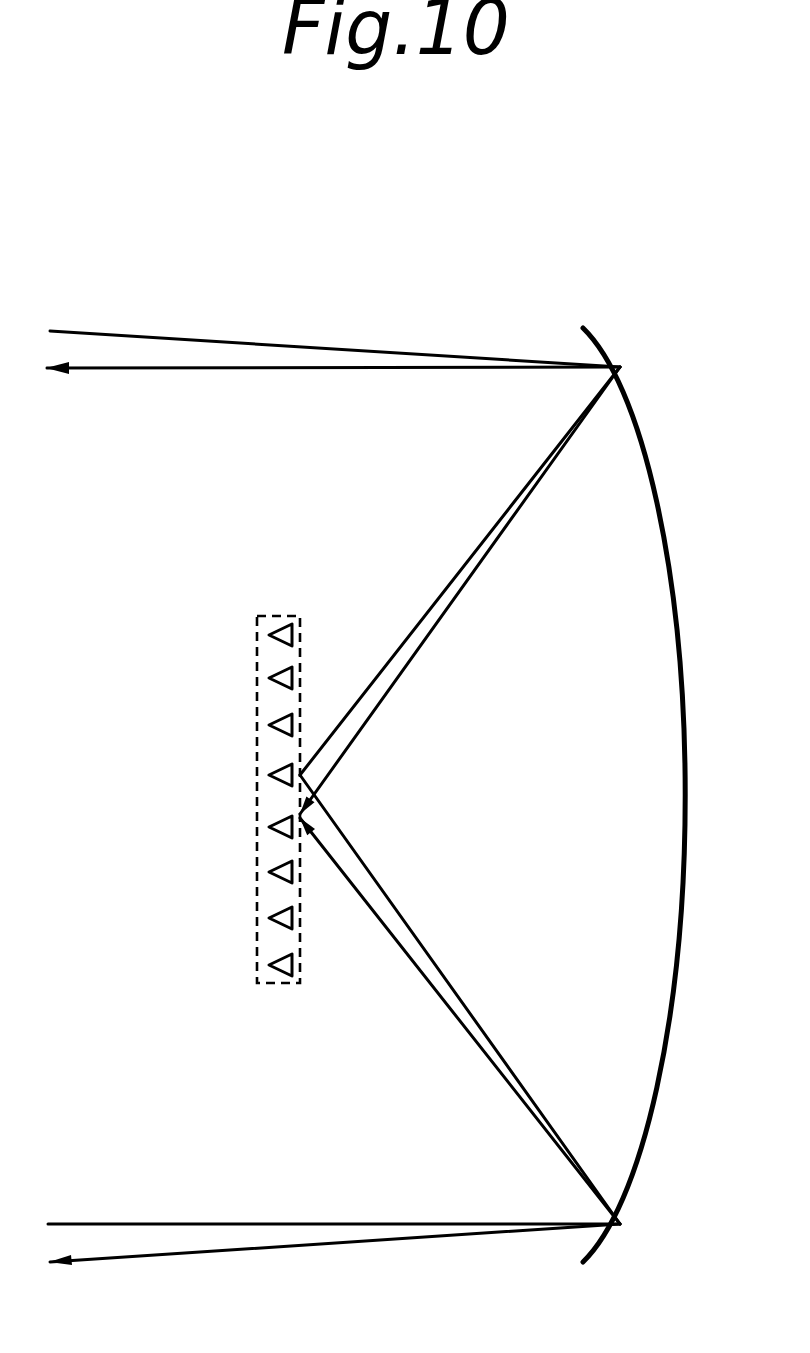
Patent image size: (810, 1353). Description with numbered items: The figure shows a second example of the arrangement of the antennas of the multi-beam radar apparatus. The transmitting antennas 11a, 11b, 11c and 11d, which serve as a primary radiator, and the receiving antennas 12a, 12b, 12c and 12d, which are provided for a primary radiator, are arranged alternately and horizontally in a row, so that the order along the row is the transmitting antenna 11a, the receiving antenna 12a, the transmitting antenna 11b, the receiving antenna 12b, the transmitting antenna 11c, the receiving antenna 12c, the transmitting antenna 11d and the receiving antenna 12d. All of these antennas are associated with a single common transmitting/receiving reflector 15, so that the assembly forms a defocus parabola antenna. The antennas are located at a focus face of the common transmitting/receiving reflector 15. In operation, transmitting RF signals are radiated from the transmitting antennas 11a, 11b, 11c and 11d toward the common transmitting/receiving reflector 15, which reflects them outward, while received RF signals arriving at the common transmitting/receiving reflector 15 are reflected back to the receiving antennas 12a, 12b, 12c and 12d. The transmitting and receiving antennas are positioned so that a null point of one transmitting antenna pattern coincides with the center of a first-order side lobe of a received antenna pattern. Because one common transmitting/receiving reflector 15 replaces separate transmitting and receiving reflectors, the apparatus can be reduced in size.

The transmitting antenna 11a is at (269, 635).
The transmitting antenna 11b is at (269, 725).
The transmitting antenna 11c is at (269, 827).
The transmitting antenna 11d is at (269, 918).
The receiving antenna 12a is at (269, 678).
The receiving antenna 12b is at (269, 775).
The receiving antenna 12c is at (269, 872).
The receiving antenna 12d is at (269, 965).
The common transmitting/receiving reflector 15 is at (638, 395).